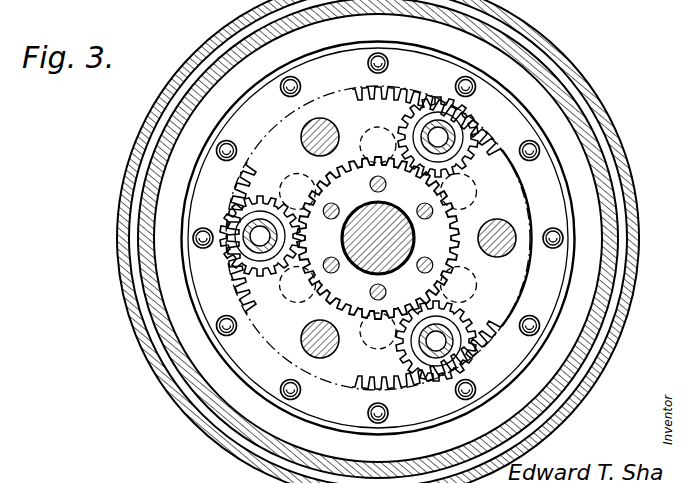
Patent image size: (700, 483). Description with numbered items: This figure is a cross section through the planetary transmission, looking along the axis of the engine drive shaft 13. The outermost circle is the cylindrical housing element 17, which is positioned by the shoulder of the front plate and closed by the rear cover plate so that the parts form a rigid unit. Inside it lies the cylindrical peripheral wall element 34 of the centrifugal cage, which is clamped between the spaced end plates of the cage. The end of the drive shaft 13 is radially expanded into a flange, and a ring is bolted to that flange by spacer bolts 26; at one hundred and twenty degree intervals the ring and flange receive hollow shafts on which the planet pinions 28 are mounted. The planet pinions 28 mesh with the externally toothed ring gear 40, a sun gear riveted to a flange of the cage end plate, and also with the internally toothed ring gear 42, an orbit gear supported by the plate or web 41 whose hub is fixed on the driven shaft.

The engine drive shaft 13 is at (396, 206).
The cylindrical housing element 17 is at (124, 271).
The spacer bolts 26 is at (337, 126).
The planet pinions 28 is at (290, 185).
The cylindrical peripheral wall element 34 is at (203, 385).
The externally toothed ring gear 40 is at (470, 215).
The plate or web 41 is at (386, 420).
The internally toothed ring gear 42 is at (527, 193).